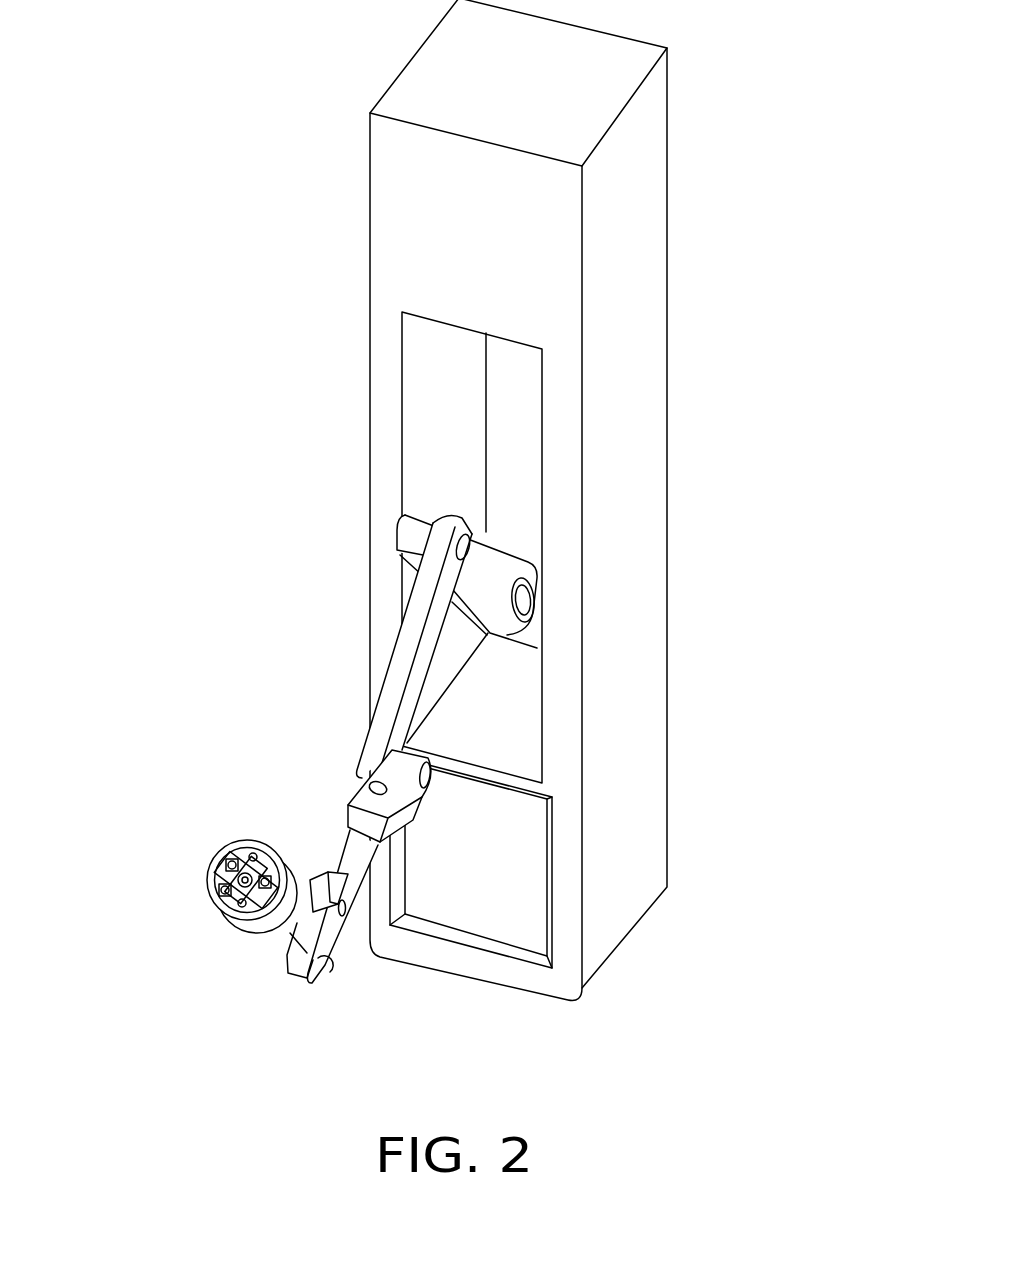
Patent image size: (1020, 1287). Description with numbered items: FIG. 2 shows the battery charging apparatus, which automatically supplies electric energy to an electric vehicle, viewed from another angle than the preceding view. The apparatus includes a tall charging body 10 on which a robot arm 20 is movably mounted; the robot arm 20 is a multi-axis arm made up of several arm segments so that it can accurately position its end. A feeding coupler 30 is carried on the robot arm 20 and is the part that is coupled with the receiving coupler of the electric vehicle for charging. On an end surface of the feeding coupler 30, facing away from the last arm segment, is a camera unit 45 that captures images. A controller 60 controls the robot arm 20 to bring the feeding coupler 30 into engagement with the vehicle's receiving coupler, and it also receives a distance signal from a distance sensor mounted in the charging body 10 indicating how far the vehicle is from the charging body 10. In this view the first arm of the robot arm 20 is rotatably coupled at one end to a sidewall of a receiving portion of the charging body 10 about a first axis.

The charging body 10 is at (423, 208).
The robot arm 20 is at (276, 688).
The feeding coupler 30 is at (246, 925).
The camera unit 45 is at (228, 882).
The controller 60 is at (515, 860).